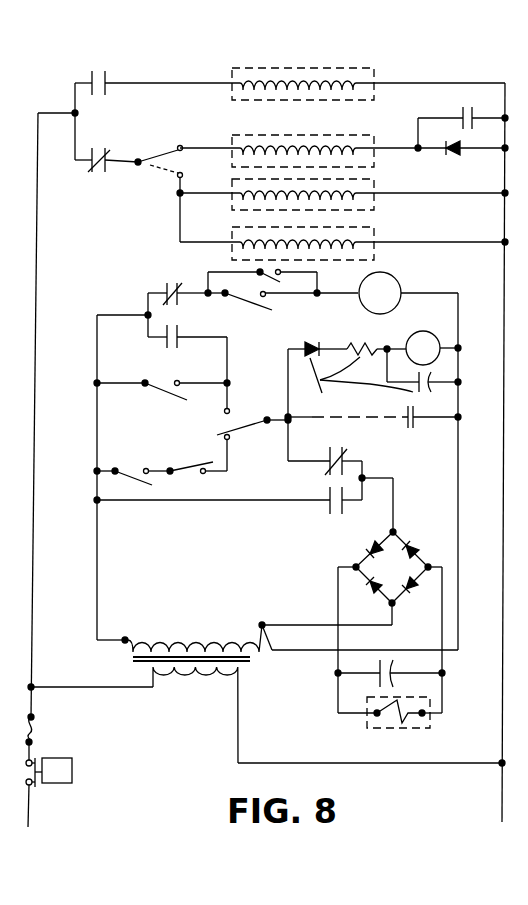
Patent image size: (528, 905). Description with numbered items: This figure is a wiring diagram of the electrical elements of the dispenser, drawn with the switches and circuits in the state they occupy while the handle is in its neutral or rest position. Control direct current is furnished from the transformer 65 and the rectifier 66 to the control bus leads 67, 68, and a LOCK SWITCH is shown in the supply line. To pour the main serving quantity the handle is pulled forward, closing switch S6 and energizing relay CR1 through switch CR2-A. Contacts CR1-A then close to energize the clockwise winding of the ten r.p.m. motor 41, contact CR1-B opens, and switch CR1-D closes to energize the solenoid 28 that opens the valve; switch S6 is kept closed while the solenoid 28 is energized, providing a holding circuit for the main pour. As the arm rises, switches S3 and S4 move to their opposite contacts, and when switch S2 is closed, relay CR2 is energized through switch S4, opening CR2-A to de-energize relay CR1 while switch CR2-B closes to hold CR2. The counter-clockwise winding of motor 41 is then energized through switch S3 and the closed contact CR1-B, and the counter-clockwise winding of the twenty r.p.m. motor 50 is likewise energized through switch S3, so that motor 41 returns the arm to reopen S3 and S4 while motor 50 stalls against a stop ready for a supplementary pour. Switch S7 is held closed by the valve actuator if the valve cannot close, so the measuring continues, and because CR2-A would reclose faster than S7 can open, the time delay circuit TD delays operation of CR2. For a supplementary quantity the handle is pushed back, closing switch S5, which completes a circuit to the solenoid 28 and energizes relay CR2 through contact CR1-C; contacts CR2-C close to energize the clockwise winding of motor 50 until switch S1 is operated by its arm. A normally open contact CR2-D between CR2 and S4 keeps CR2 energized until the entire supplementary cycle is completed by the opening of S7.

The 10 r.p.m. motor 41 is at (338, 60).
The 20 r.p.m. motor 50 is at (304, 127).
The relay CR1 contacts CR1-A is at (108, 70).
The relay CR1 contact CR1-B is at (106, 150).
The relay CR1 contact CR1-C is at (345, 455).
The relay CR1 switch CR1-D is at (328, 508).
The relay CR2 switch CR2-A is at (190, 268).
The relay CR2 switch CR2-B is at (182, 332).
The relay CR2 contacts CR2-C is at (464, 108).
The normally open contact CR2-D is at (408, 412).
The relay CR1 is at (395, 276).
The relay CR2 is at (440, 311).
The switch S1 is at (185, 460).
The switch S2 is at (162, 380).
The switch S3 is at (163, 165).
The switch S4 is at (268, 387).
The switch S5 is at (132, 465).
The switch S6 is at (258, 304).
The switch S7 is at (272, 284).
The time delay circuit TD is at (359, 379).
The transformer 65 is at (193, 621).
The rectifier 66 is at (409, 539).
The control bus lead 67 is at (97, 553).
The control bus lead 68 is at (460, 437).
The solenoid 28 is at (424, 734).
The lock switch LOCK SWITCH is at (58, 758).